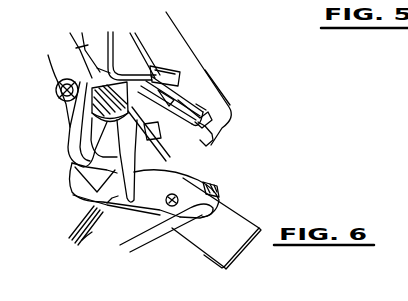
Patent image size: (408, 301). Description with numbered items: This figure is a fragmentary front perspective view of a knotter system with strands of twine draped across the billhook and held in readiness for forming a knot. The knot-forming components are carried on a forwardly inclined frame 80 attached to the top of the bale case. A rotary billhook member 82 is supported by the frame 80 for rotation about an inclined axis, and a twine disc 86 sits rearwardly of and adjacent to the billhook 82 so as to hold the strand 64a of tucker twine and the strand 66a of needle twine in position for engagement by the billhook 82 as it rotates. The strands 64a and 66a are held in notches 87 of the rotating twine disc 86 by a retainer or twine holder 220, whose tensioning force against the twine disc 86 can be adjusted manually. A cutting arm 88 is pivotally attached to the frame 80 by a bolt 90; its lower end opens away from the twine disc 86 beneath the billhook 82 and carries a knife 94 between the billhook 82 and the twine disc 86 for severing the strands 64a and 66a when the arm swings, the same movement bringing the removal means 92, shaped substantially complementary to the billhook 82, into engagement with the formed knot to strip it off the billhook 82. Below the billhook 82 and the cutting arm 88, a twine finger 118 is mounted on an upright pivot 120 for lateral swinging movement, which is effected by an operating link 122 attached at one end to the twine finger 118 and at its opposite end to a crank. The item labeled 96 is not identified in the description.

The frame 80 is at (174, 38).
The billhook member 82 is at (141, 156).
The twine disc 86 is at (231, 108).
The notches 87 is at (180, 100).
The cutting arm 88 is at (62, 135).
The bolt 90 is at (56, 100).
The removal means 92 is at (107, 204).
The knife 94 is at (199, 145).
The hose 96 is at (108, 72).
The twine finger 118 is at (72, 190).
The upright pivot 120 is at (204, 172).
The operating link 122 is at (157, 229).
The retainer 220 is at (167, 77).
The strand of tucker twine 64a is at (73, 221).
The strand of needle twine 66a is at (82, 240).